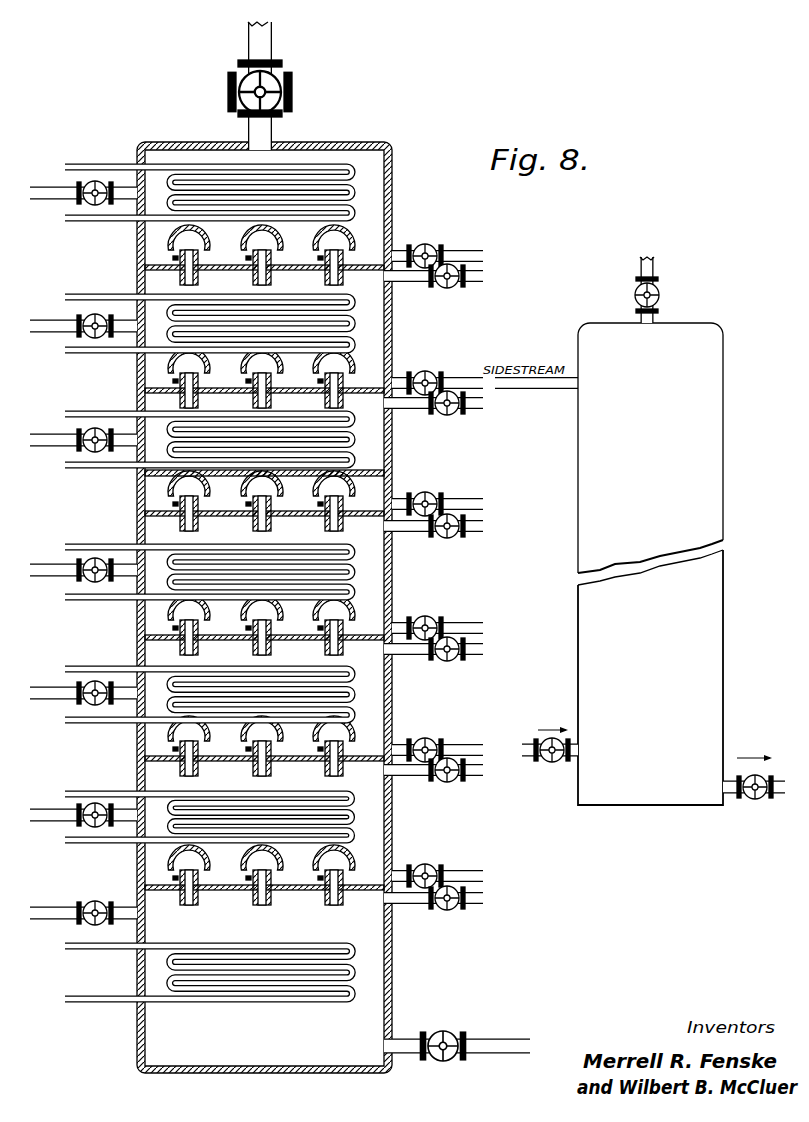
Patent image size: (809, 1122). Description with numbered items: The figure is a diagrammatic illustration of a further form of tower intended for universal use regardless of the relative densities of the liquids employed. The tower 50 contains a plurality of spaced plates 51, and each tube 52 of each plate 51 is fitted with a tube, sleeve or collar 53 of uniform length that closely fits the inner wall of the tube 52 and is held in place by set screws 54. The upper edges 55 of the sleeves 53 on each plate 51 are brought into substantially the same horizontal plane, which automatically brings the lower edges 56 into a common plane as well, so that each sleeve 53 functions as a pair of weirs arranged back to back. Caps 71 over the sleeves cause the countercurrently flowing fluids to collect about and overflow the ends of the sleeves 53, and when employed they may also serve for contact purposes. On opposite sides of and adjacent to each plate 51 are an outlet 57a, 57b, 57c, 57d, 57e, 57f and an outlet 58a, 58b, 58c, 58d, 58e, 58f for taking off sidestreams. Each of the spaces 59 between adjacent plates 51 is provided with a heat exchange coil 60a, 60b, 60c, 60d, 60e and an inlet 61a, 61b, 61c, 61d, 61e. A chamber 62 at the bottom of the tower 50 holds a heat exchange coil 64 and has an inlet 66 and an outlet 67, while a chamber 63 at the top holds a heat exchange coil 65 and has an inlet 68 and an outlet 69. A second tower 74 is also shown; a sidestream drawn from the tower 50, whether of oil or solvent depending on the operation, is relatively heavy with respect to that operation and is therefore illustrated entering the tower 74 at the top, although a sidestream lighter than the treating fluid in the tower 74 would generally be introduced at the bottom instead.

The tower 50 is at (396, 585).
The plate 51 is at (374, 270).
The tube 52 is at (282, 880).
The tube, sleeve or collar 53 is at (261, 894).
The set screw 54 is at (247, 890).
The upper edge 55 is at (284, 872).
The lower edge 56 is at (331, 894).
The outlet 57a is at (400, 258).
The outlet 57b is at (400, 384).
The outlet 57c is at (400, 506).
The outlet 57d is at (400, 628).
The outlet 57e is at (400, 750).
The outlet 57f is at (400, 876).
The outlet 58a is at (402, 286).
The outlet 58b is at (402, 413).
The outlet 58c is at (400, 537).
The outlet 58d is at (403, 658).
The outlet 58e is at (402, 780).
The outlet 58f is at (402, 907).
The space 59 is at (368, 343).
The heat exchange coil 60a is at (88, 355).
The heat exchange coil 60b is at (88, 470).
The heat exchange coil 60c is at (95, 602).
The heat exchange coil 60d is at (95, 725).
The heat exchange coil 60e is at (80, 845).
The inlet 61a is at (55, 331).
The inlet 61b is at (55, 447).
The inlet 61c is at (55, 577).
The inlet 61d is at (55, 700).
The inlet 61e is at (50, 811).
The chamber 62 is at (272, 1050).
The chamber 63 is at (367, 205).
The heat exchange coil 64 is at (93, 1004).
The heat exchange coil 65 is at (96, 166).
The inlet 66 is at (128, 906).
The outlet 67 is at (407, 1042).
The inlet 68 is at (55, 197).
The outlet 69 is at (266, 136).
The cap 71 is at (349, 250).
The tower 74 is at (653, 531).